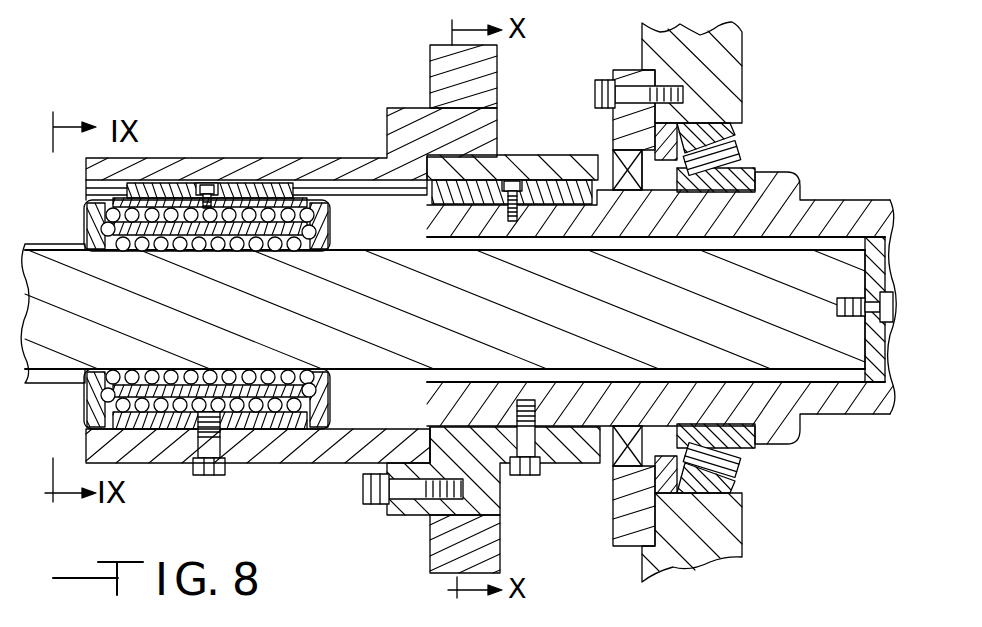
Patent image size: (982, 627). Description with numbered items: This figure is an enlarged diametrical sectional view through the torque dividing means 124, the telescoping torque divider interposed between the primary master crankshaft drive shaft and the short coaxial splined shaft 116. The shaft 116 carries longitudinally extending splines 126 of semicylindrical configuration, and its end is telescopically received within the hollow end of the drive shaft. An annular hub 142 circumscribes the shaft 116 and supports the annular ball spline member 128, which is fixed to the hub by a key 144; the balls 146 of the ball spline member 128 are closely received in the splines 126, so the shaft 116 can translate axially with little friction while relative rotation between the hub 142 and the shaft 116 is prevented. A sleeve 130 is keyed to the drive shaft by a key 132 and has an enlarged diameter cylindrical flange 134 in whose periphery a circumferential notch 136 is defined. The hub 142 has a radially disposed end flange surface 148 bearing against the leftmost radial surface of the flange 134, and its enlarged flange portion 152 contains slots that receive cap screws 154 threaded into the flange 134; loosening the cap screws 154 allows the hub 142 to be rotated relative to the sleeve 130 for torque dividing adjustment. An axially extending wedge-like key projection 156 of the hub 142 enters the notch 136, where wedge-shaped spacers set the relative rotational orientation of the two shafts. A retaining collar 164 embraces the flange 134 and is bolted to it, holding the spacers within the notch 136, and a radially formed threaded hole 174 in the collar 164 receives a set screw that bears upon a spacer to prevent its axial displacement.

The splined shaft 116 is at (62, 332).
The torque dividing means 124 is at (312, 112).
The splines 126 is at (83, 250).
The ball spline member 128 is at (86, 200).
The sleeve 130 is at (552, 466).
The key 132 is at (563, 180).
The sleeve flange 134 is at (487, 503).
The circumferential notch 136 is at (329, 100).
The annular hub 142 is at (258, 464).
The key 144 is at (228, 188).
The balls 146 is at (242, 368).
The end flange surface 148 is at (430, 452).
The enlarged flange portion 152 is at (422, 513).
The cap screws 154 is at (372, 492).
The key projection 156 is at (480, 127).
The retaining collar 164 is at (445, 62).
The threaded hole 174 is at (858, 163).